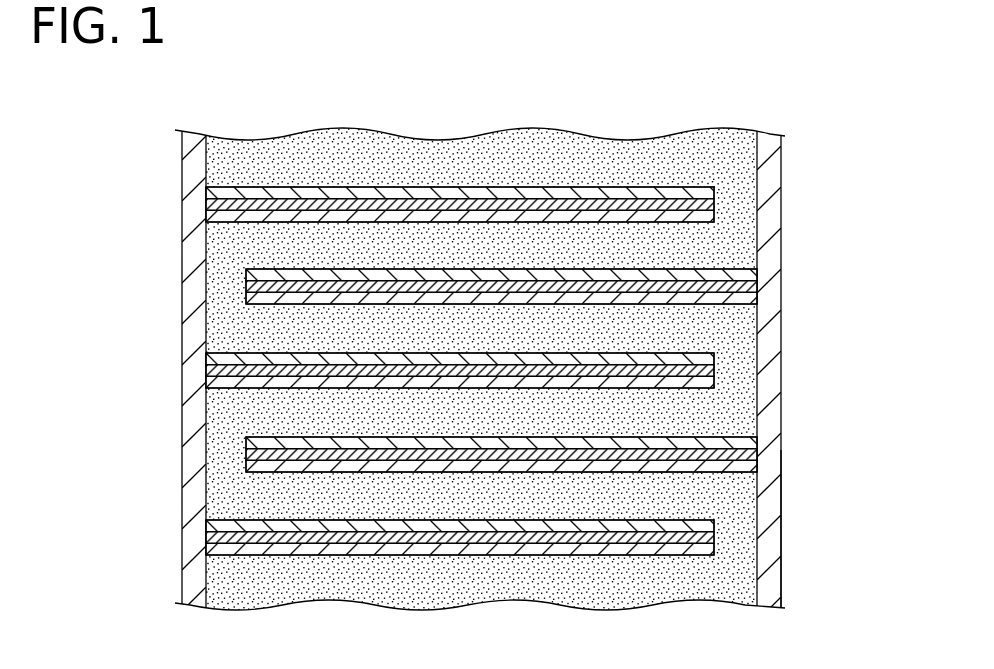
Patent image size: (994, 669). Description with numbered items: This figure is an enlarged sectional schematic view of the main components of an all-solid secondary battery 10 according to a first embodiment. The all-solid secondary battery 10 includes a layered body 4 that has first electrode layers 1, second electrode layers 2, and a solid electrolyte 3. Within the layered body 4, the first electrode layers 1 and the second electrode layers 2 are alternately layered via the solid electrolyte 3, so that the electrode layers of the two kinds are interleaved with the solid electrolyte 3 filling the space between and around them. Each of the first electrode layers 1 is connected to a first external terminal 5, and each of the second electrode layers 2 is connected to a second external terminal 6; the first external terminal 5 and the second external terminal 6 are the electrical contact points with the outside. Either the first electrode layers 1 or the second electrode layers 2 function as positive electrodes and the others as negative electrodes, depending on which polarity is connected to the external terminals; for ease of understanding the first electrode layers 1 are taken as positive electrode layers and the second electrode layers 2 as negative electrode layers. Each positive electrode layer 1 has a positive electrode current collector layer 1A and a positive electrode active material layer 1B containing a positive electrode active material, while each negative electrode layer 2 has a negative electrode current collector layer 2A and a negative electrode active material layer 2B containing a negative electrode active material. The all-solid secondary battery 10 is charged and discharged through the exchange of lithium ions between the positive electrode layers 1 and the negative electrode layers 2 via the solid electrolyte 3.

The all-solid secondary battery 10 is at (824, 112).
The first electrode layer 1 is at (379, 361).
The positive electrode current collector layer 1A is at (206, 203).
The positive electrode active material layer 1B is at (206, 191).
The second electrode layer 2 is at (585, 363).
The negative electrode current collector layer 2A is at (757, 287).
The negative electrode active material layer 2B is at (757, 272).
The solid electrolyte 3 is at (725, 328).
The layered body 4 is at (763, 225).
The first external terminal 5 is at (195, 297).
The second external terminal 6 is at (768, 546).